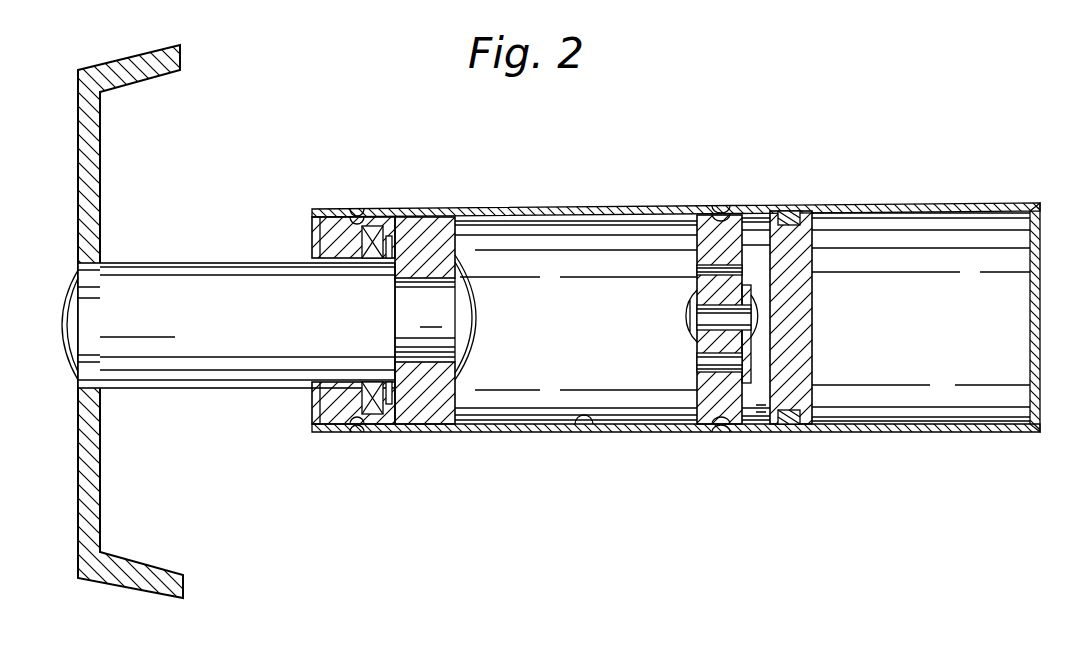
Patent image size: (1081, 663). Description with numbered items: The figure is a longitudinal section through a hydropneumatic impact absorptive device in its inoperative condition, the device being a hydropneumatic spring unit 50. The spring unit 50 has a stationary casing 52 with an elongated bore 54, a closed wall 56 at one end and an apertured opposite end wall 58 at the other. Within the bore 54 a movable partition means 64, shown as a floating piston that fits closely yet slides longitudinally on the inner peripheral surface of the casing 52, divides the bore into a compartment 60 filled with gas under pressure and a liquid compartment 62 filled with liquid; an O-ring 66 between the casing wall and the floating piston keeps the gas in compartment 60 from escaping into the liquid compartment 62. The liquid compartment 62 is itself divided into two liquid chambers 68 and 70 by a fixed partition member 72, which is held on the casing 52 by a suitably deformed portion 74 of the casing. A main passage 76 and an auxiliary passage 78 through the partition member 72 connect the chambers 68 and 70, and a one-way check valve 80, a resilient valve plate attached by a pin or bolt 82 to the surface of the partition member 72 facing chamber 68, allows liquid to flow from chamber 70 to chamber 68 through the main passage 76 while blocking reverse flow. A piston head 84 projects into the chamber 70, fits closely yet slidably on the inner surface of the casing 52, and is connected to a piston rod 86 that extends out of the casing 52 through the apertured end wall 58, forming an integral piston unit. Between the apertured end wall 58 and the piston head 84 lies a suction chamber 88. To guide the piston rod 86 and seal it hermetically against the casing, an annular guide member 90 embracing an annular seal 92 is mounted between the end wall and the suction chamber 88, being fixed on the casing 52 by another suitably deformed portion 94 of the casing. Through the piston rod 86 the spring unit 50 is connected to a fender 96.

The hydropneumatic spring unit 50 is at (599, 195).
The stationary casing 52 is at (512, 433).
The elongated bore 54 is at (592, 432).
The closed wall 56 is at (1040, 278).
The apertured opposite end wall 58 is at (312, 248).
The compartment 60 is at (938, 338).
The liquid compartment 62 is at (592, 342).
The movable partition means 64 is at (812, 368).
The O-ring 66 is at (789, 428).
The liquid chamber 68 is at (752, 228).
The liquid chamber 70 is at (650, 225).
The fixed partition member 72 is at (702, 432).
The deformed portion of the casing 74 is at (722, 206).
The main passage 76 is at (707, 365).
The auxiliary passage 78 is at (697, 292).
The one-way check valve 80 is at (760, 428).
The pin or bolt 82 is at (756, 300).
The piston head 84 is at (477, 240).
The piston rod 86 is at (175, 262).
The suction chamber 88 is at (390, 218).
The annular guide member 90 is at (330, 218).
The annular seal 92 is at (358, 432).
The deformed portion of the casing 94 is at (357, 210).
The fender 96 is at (100, 132).